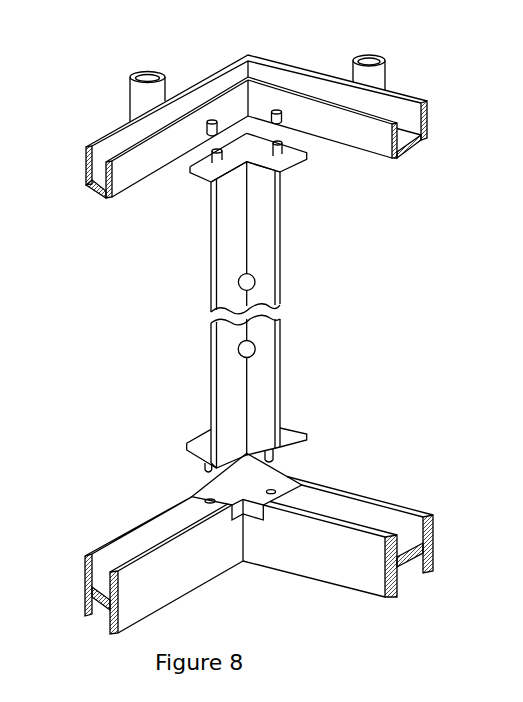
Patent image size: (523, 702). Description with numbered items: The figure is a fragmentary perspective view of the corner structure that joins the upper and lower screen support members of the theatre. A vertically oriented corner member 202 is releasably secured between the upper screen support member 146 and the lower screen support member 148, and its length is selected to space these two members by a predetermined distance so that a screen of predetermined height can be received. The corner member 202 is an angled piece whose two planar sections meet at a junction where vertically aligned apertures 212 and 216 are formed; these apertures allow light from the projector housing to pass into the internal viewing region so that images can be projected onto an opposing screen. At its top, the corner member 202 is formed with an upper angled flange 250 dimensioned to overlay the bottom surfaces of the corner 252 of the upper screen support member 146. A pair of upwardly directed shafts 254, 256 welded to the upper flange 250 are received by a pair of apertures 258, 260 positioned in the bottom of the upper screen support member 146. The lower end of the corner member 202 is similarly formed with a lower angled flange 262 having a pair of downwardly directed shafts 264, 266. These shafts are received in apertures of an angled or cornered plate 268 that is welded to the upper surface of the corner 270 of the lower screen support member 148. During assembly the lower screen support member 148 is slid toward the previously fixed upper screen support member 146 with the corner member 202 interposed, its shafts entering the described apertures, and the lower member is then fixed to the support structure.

The upper screen support member 146 is at (256, 112).
The corner of the upper screen support member 252 is at (243, 52).
The aperture in the upper screen support member 258 is at (279, 109).
The aperture in the upper screen support member 260 is at (210, 118).
The corner member 202 is at (256, 249).
The aperture 212 is at (257, 282).
The aperture 216 is at (257, 348).
The upper angled flange 250 is at (296, 146).
The upwardly directed shaft 254 is at (326, 119).
The upwardly directed shaft 256 is at (209, 166).
The lower angled flange 262 is at (202, 444).
The downwardly directed shaft 264 is at (278, 459).
The downwardly directed shaft 266 is at (199, 466).
The cornered plate 268 is at (231, 487).
The lower screen support member 148 is at (259, 545).
The corner of the lower screen support member 270 is at (246, 532).